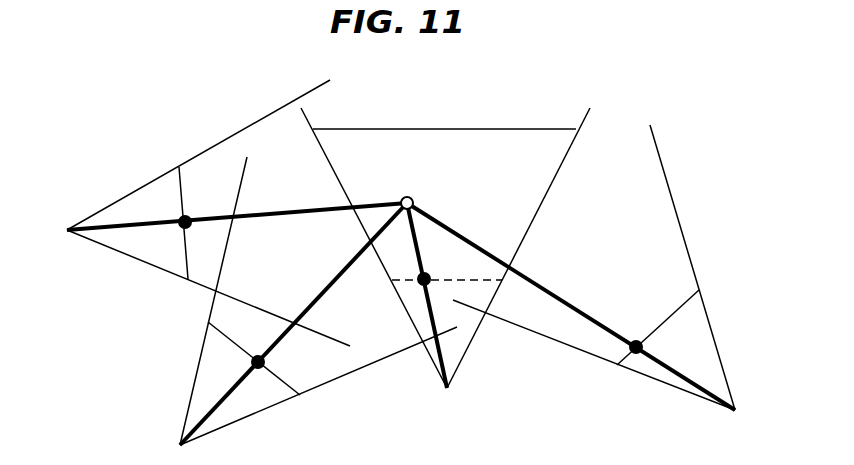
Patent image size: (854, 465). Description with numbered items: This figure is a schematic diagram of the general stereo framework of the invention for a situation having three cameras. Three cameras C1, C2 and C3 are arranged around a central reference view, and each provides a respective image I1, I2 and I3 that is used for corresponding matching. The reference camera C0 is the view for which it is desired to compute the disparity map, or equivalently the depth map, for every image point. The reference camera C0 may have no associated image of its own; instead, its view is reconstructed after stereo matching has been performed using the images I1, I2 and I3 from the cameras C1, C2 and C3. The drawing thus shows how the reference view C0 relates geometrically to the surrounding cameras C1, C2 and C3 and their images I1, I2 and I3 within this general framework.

The reference camera C0 is at (445, 272).
The first camera C1 is at (302, 310).
The second camera C2 is at (585, 285).
The third camera C3 is at (226, 213).
The first image I1 is at (265, 378).
The second image I2 is at (673, 311).
The third image I3 is at (179, 199).